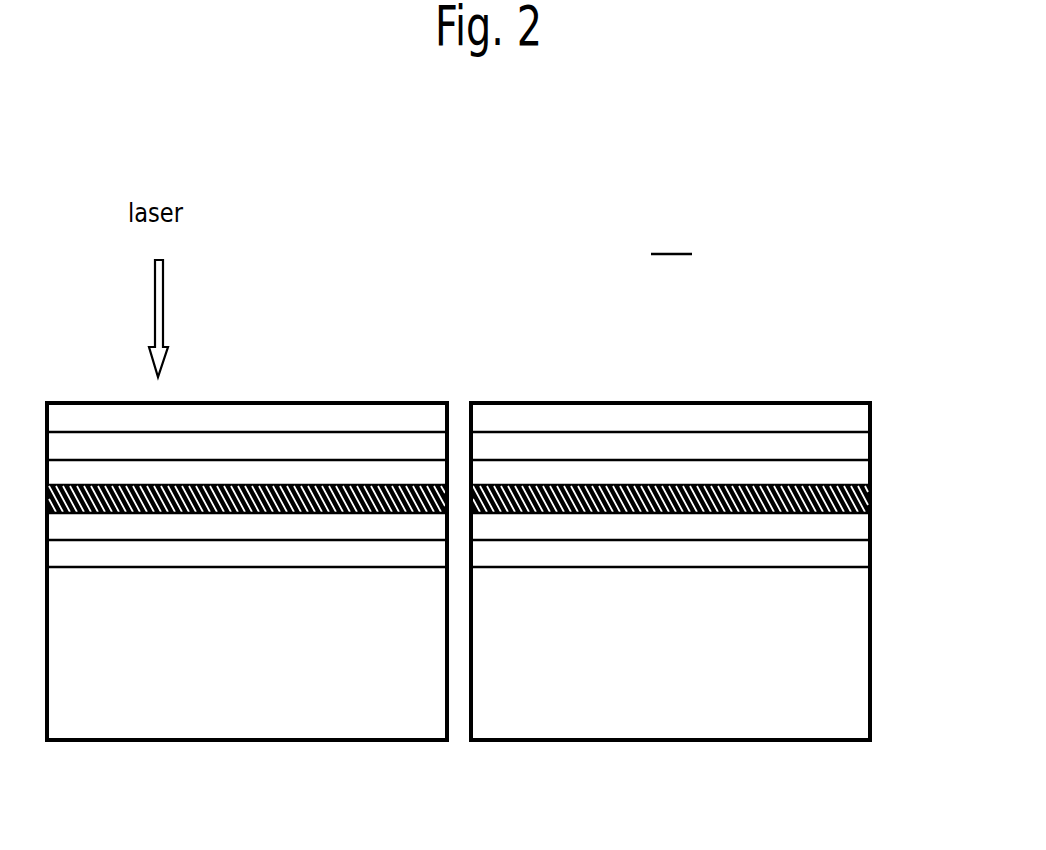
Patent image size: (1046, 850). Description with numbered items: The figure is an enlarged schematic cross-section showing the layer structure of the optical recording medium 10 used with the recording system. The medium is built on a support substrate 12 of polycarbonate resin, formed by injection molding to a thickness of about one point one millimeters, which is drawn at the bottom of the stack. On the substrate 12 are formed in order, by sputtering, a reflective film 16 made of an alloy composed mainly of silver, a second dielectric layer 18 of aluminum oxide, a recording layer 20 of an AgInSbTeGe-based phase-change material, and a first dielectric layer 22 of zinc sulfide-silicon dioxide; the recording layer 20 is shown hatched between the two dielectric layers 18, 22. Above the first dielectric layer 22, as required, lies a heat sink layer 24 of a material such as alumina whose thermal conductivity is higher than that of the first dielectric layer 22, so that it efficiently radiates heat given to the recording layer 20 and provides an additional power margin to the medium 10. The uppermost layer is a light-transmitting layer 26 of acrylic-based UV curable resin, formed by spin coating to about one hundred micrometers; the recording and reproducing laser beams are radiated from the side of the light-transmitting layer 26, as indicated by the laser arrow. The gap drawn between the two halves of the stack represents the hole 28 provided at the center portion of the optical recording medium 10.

The optical recording medium 10 is at (671, 237).
The support substrate 12 is at (873, 656).
The reflective film 16 is at (875, 560).
The second dielectric layer 18 is at (875, 533).
The recording layer 20 is at (875, 503).
The first dielectric layer 22 is at (875, 477).
The heat sink layer 24 is at (875, 448).
The light-transmitting layer 26 is at (875, 418).
The hole 28 is at (458, 748).